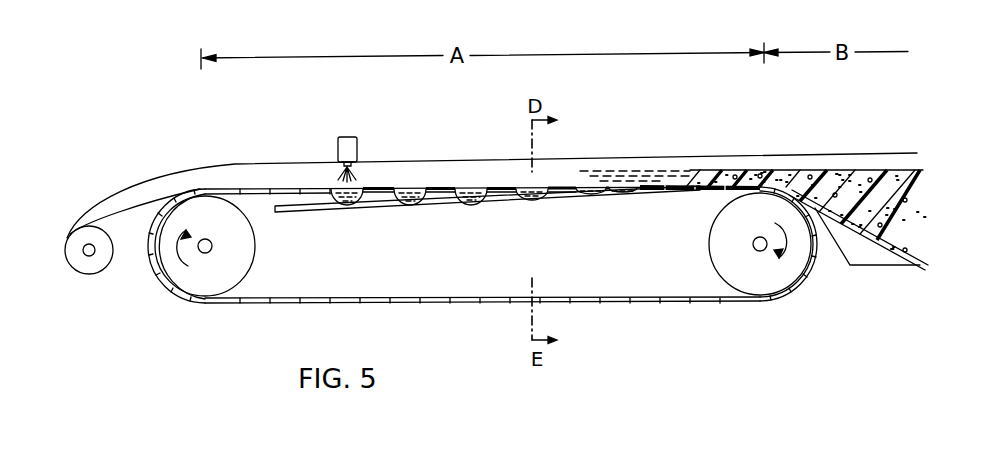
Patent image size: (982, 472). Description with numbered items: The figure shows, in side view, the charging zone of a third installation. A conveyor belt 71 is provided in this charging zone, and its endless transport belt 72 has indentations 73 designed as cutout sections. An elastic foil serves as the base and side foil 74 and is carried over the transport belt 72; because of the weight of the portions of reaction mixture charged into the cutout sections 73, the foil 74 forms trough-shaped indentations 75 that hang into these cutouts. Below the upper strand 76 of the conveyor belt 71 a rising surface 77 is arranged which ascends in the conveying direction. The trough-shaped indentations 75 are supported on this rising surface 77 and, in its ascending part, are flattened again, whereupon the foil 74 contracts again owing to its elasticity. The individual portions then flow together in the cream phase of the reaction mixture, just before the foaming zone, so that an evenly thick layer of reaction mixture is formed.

The conveyor belt 71 is at (345, 307).
The endless transport belt 72 is at (372, 298).
The indentations (cutout sections) 73 is at (330, 196).
The base and side foil 74 is at (135, 197).
The trough-shaped indentations 75 is at (398, 186).
The upper strand 76 is at (385, 193).
The rising surface 77 is at (487, 201).